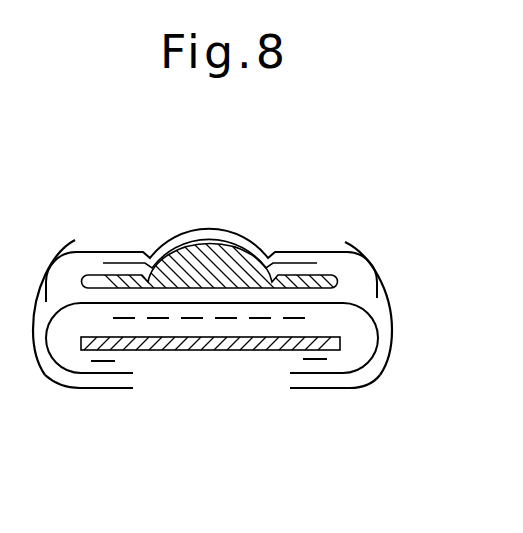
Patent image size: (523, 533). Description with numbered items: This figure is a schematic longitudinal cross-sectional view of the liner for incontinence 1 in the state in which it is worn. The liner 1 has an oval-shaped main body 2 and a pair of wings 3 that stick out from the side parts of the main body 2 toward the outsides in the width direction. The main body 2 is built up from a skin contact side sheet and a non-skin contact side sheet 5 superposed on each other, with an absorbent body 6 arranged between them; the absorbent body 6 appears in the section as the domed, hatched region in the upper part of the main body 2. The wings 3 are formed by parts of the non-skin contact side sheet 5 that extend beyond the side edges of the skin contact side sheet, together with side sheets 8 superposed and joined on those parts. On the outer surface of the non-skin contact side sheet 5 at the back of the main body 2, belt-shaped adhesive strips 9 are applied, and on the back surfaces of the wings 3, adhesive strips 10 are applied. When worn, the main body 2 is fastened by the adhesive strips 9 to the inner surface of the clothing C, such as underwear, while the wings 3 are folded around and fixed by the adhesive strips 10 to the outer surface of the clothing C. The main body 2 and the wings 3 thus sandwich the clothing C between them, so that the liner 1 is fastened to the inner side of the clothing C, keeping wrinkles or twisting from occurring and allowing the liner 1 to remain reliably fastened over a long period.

The liner for incontinence 1 is at (377, 208).
The main body 2 is at (279, 249).
The wings 3 is at (75, 392).
The non-skin contact side sheet 5 is at (327, 303).
The absorbent body 6 is at (185, 257).
The side sheets 8 is at (352, 388).
The adhesive strips 9 is at (200, 318).
The adhesive strips 10 is at (108, 361).
The clothing C is at (250, 350).